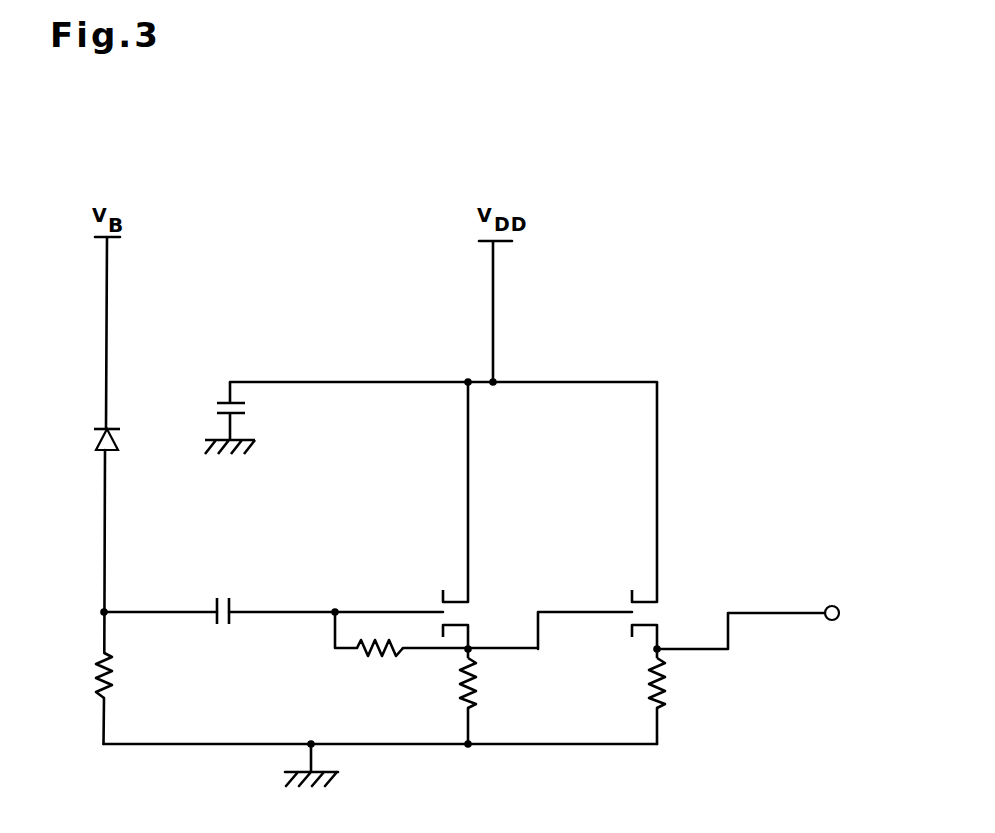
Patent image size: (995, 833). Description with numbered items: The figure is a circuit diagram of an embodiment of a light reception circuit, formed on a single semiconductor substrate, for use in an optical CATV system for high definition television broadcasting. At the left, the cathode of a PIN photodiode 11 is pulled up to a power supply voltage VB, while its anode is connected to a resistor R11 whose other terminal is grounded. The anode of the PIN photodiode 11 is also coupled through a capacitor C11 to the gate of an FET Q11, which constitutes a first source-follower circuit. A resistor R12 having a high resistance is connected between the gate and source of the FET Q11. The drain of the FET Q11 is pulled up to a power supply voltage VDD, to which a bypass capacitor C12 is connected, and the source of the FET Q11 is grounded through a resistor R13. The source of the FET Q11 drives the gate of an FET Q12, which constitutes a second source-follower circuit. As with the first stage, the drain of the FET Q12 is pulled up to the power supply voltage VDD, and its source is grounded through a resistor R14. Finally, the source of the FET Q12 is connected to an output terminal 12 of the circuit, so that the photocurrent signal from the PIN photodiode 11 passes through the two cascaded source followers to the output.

The PIN photodiode 11 is at (98, 438).
The output terminal 12 is at (836, 606).
The resistor R11 is at (75, 675).
The resistor R12 is at (385, 668).
The resistor R13 is at (495, 683).
The resistor R14 is at (687, 683).
The capacitor C11 is at (233, 594).
The bypass capacitor C12 is at (209, 418).
The FET Q11 is at (488, 520).
The FET Q12 is at (676, 520).